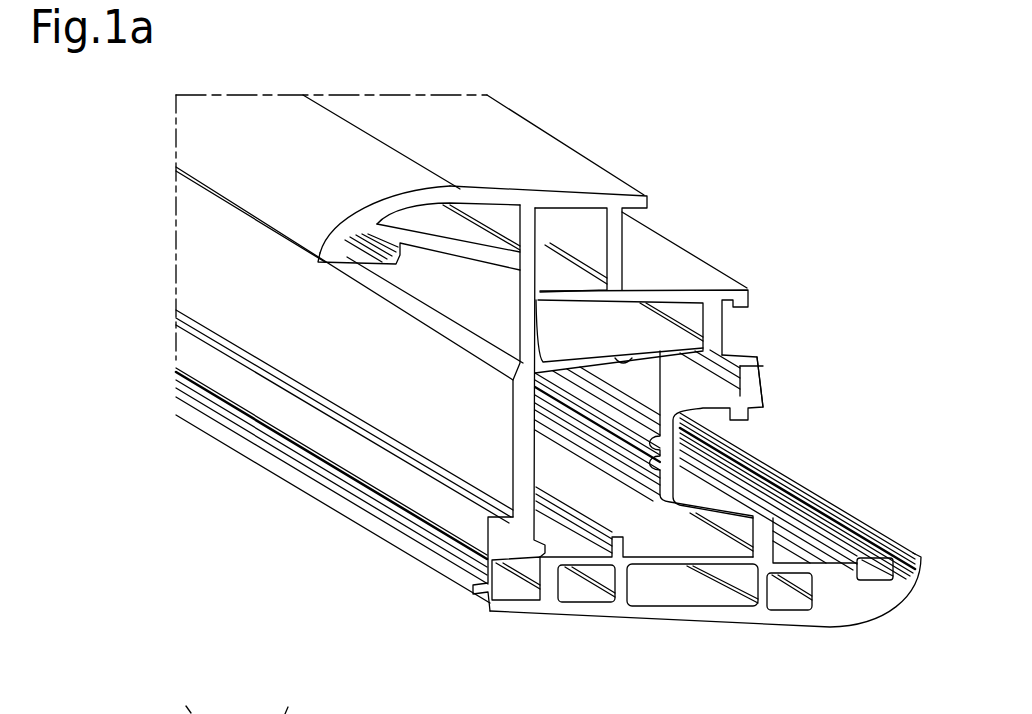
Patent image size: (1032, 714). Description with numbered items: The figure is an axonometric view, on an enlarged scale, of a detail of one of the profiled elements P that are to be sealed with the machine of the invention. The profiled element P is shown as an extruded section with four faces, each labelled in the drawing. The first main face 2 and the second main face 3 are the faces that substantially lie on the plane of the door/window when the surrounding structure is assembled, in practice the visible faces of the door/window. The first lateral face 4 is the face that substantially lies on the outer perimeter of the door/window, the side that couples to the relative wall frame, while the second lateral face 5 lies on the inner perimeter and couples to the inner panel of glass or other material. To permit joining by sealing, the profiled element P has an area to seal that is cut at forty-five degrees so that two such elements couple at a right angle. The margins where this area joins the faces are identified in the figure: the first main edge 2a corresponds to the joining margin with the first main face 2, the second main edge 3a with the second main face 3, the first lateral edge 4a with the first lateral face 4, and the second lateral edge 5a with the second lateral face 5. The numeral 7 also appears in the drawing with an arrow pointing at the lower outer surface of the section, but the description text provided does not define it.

The first main face 2 is at (647, 593).
The first main edge 2a is at (587, 612).
The second main face 3 is at (484, 153).
The second main edge 3a is at (612, 200).
The first lateral face 4 is at (752, 347).
The first lateral edge 4a is at (753, 380).
The second lateral face 5 is at (335, 348).
The second lateral edge 5a is at (519, 437).
The outer surface 7 is at (827, 628).
The profiled element P is at (150, 193).